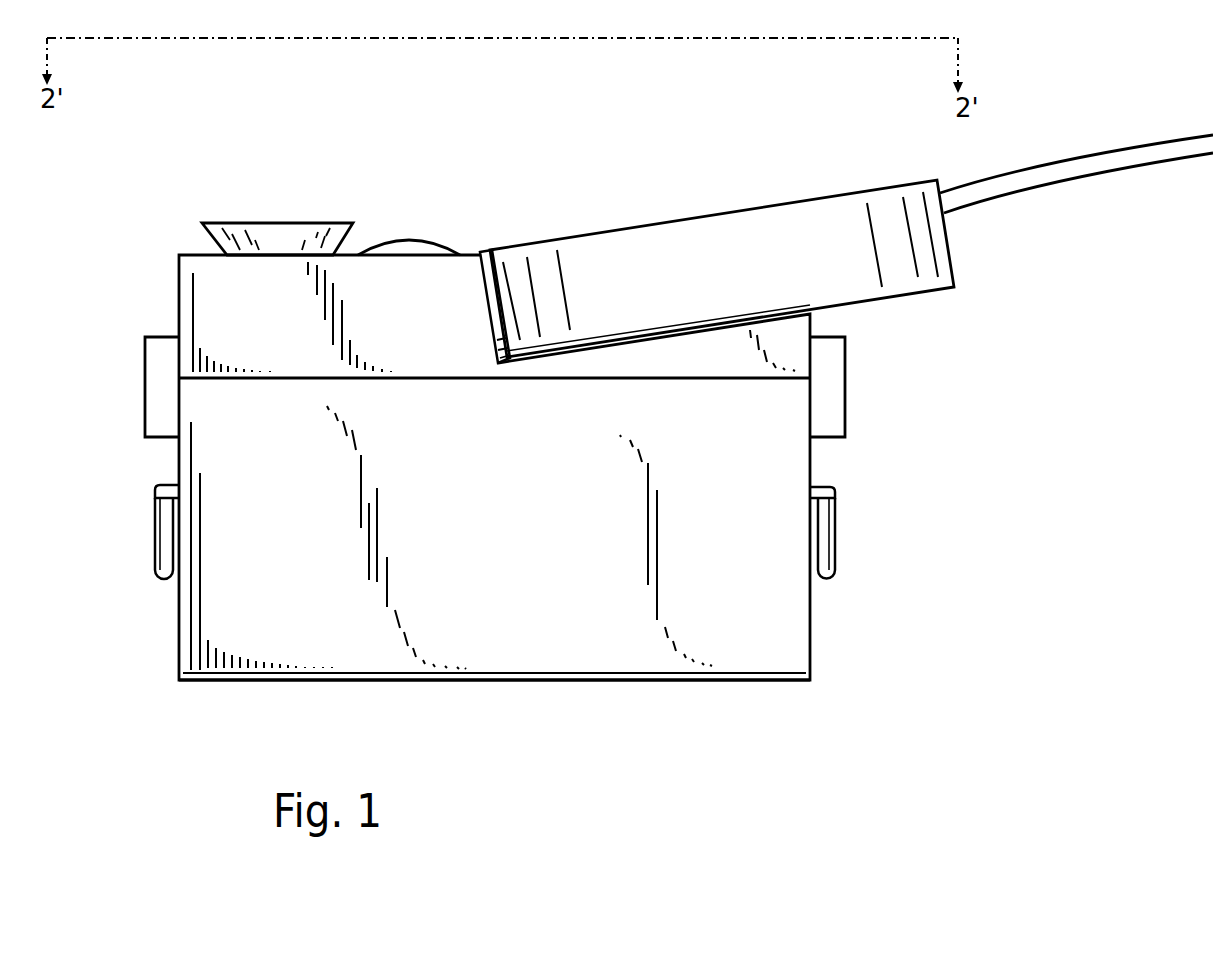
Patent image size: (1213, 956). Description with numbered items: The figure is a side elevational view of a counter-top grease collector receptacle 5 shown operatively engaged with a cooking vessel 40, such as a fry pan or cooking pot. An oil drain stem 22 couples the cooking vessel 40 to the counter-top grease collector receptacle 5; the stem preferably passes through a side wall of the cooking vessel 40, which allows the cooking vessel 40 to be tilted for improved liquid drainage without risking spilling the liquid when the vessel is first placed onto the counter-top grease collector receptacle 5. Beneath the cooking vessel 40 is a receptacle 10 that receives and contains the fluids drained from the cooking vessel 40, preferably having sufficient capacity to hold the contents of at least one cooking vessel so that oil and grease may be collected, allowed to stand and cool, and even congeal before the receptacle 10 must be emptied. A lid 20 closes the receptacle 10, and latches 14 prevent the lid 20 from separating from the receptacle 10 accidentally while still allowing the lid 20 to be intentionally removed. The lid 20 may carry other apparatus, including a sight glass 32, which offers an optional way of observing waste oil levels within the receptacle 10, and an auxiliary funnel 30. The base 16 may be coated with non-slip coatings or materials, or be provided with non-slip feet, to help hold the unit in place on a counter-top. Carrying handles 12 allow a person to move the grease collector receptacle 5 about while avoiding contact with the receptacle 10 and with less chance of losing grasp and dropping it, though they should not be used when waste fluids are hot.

The counter-top grease collector receptacle 5 is at (126, 189).
The receptacle 10 is at (440, 533).
The carrying handles 12 is at (160, 503).
The latches 14 is at (157, 405).
The base 16 is at (570, 680).
The lid 20 is at (400, 344).
The oil drain stem 22 is at (493, 337).
The auxiliary funnel 30 is at (277, 222).
The sight glass 32 is at (400, 250).
The cooking vessel 40 is at (682, 272).